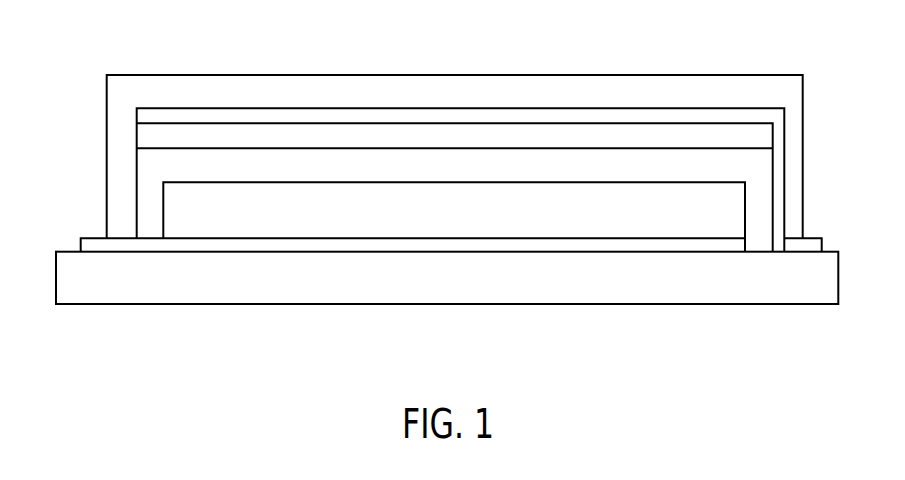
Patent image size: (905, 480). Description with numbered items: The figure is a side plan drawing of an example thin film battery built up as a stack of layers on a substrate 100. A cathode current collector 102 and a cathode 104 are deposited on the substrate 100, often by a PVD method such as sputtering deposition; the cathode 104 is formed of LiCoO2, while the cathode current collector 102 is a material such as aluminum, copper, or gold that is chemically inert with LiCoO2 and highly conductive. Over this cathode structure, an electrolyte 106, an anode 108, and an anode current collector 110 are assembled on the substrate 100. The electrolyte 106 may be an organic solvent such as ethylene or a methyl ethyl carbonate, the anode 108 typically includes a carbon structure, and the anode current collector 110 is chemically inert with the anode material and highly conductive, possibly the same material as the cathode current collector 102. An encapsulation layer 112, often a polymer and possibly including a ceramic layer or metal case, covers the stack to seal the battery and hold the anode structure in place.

The substrate 100 is at (463, 305).
The cathode current collector 102 is at (91, 237).
The cathode 104 is at (282, 225).
The electrolyte 106 is at (136, 158).
The anode 108 is at (717, 123).
The anode current collector 110 is at (813, 235).
The encapsulation layer 112 is at (280, 75).